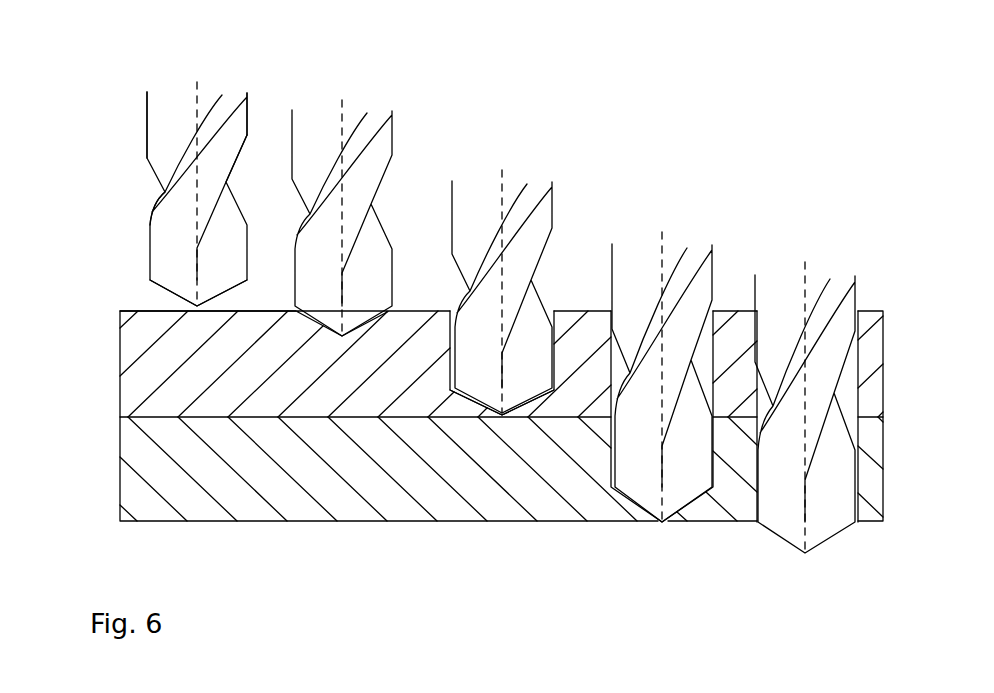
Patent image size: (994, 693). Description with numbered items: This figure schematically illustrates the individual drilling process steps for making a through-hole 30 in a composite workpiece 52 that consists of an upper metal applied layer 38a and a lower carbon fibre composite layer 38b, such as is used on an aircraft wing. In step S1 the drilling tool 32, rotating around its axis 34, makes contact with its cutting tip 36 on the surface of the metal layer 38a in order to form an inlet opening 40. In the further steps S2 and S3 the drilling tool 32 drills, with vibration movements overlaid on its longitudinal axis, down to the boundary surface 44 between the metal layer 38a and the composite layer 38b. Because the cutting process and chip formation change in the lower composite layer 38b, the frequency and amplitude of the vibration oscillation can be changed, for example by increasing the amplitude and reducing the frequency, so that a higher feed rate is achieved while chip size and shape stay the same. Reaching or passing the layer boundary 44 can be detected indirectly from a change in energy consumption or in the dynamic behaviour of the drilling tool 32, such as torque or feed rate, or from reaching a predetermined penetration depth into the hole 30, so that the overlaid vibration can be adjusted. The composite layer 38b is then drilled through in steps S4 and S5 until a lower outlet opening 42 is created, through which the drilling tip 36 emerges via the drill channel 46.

The through-hole 30 is at (697, 147).
The drilling tool 32 is at (146, 133).
The axis 34 is at (188, 205).
The cutting tip 36 is at (193, 303).
The metal applied layer 38a is at (120, 355).
The carbon fibre composite layer 38b is at (120, 460).
The inlet opening 40 is at (548, 308).
The outlet opening 42 is at (755, 520).
The boundary surface 44 is at (503, 412).
The drill channel 46 is at (698, 347).
The workpiece 52 is at (120, 312).
The step S1 is at (197, 174).
The step S2 is at (342, 198).
The step S3 is at (502, 270).
The step S4 is at (661, 352).
The step S5 is at (805, 388).